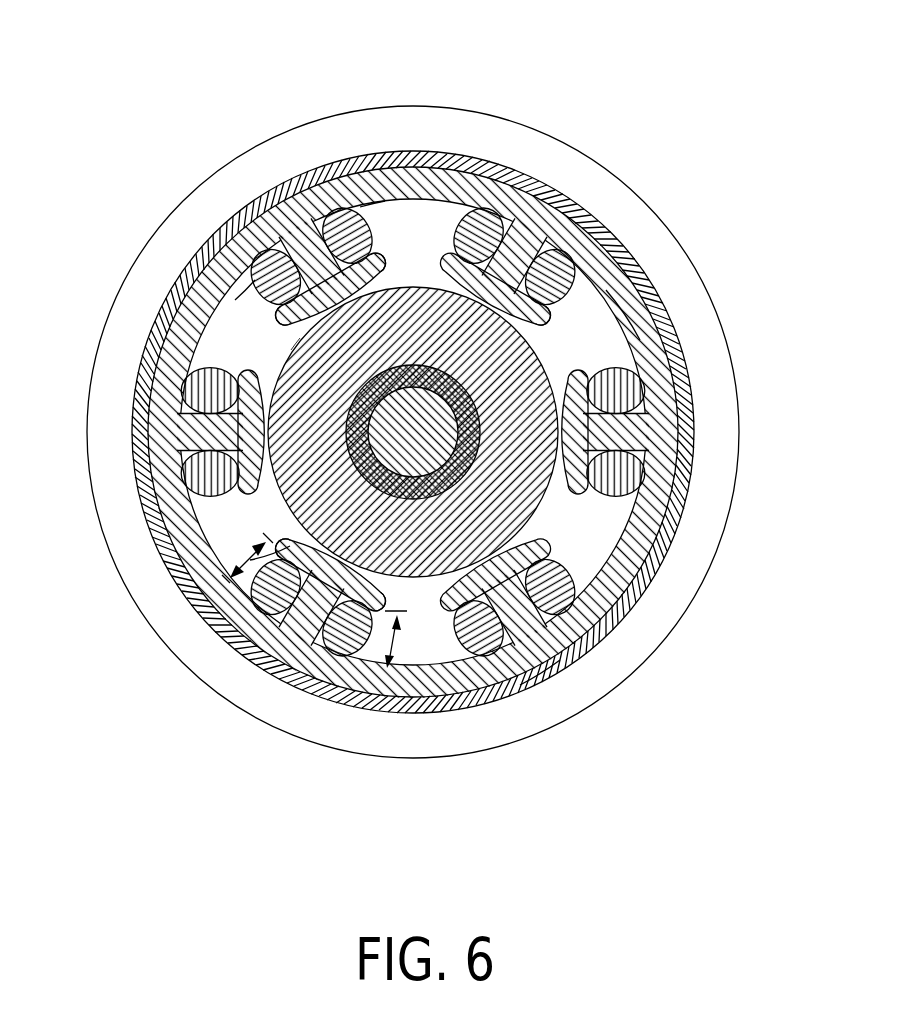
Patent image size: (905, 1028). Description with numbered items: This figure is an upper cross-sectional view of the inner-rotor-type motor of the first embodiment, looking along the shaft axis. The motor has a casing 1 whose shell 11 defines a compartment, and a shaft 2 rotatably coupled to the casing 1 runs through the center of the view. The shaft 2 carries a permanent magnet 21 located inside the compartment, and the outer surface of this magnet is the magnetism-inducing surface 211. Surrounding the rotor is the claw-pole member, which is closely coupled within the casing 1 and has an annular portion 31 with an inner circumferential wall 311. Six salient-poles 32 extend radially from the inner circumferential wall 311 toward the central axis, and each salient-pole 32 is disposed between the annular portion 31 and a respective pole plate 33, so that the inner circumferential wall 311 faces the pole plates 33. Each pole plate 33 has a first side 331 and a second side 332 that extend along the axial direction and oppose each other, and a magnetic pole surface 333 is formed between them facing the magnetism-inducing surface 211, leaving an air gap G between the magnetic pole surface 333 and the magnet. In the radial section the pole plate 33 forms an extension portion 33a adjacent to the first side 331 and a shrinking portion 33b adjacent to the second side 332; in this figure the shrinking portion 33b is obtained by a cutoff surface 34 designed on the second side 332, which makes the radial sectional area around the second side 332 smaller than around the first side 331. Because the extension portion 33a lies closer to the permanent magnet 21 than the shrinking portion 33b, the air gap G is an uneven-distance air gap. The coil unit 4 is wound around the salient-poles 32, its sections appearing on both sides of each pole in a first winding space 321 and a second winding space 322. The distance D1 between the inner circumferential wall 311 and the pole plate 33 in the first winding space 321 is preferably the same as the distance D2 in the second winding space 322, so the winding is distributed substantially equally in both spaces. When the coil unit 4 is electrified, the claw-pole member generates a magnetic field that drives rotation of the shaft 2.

The casing 1 is at (634, 629).
The shell 11 is at (570, 655).
The shaft 2 is at (440, 442).
The permanent magnet 21 is at (300, 433).
The magnetism-inducing surface 211 is at (250, 562).
The annular portion 31 is at (620, 262).
The inner circumferential wall 311 is at (605, 310).
The salient-pole 32 is at (303, 295).
The first winding space 321 is at (378, 612).
The second winding space 322 is at (240, 578).
The pole plate 33 is at (217, 253).
The extension portion 33a is at (250, 283).
The shrinking portion 33b is at (372, 210).
The first side 331 is at (283, 318).
The second side 332 is at (392, 277).
The magnetic pole surface 333 is at (585, 225).
The cutoff surface 34 is at (407, 270).
The coil unit 4 is at (715, 364).
The air gap G is at (295, 352).
The distance in the first winding space D1 is at (397, 650).
The distance in the second winding space D2 is at (222, 578).